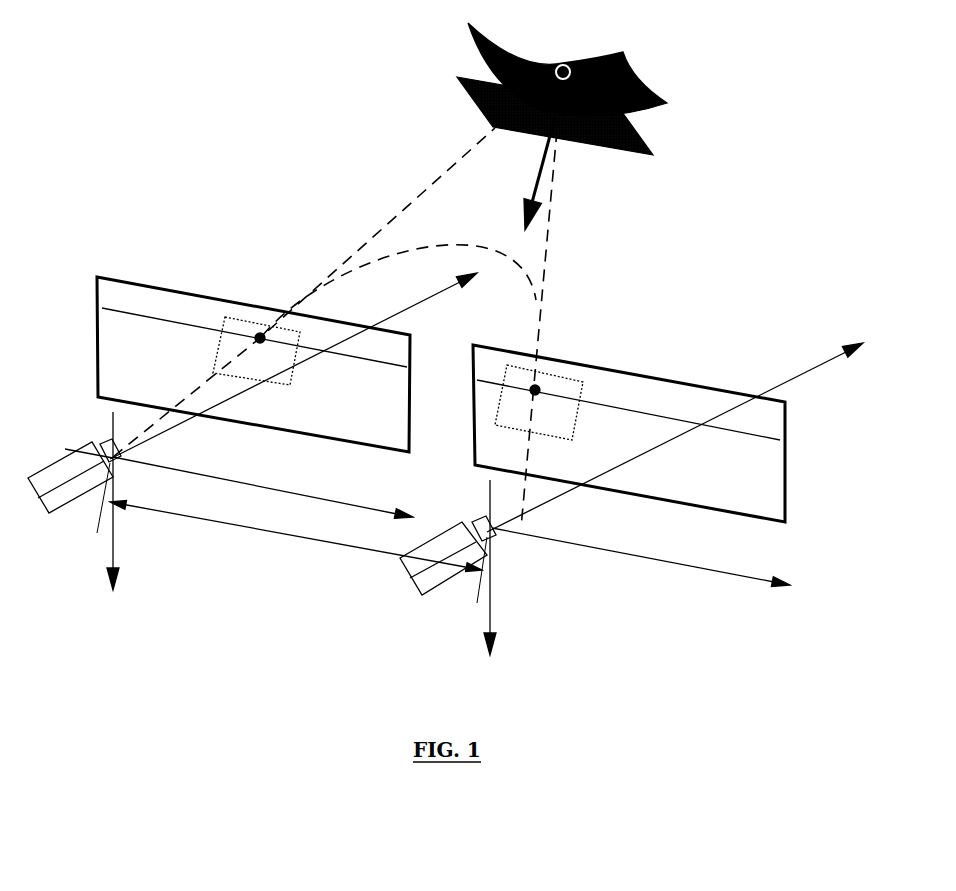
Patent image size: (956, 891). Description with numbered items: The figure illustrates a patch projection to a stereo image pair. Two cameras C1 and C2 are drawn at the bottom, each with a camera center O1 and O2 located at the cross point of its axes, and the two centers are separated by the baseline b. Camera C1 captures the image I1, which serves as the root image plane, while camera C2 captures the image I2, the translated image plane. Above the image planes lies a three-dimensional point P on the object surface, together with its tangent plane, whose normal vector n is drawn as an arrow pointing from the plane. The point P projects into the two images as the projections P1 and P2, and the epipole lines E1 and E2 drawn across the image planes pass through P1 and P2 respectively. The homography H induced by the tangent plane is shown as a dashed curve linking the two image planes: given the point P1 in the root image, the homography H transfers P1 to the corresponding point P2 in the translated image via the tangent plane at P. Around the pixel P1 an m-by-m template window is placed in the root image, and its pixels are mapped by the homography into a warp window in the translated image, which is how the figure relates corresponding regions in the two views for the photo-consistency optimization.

The 3D point P is at (571, 67).
The normal vector n is at (525, 175).
The homography transform H is at (532, 290).
The image I1 is at (97, 368).
The epipole line E1 is at (406, 367).
The projection of 3D point P1 is at (255, 339).
The camera C1 is at (70, 493).
The camera center O1 is at (110, 450).
The baseline b is at (296, 536).
The camera C2 is at (443, 570).
The camera center O2 is at (489, 522).
The image I2 is at (786, 497).
The epipole line E2 is at (779, 440).
The projection of 3D point P2 is at (538, 394).